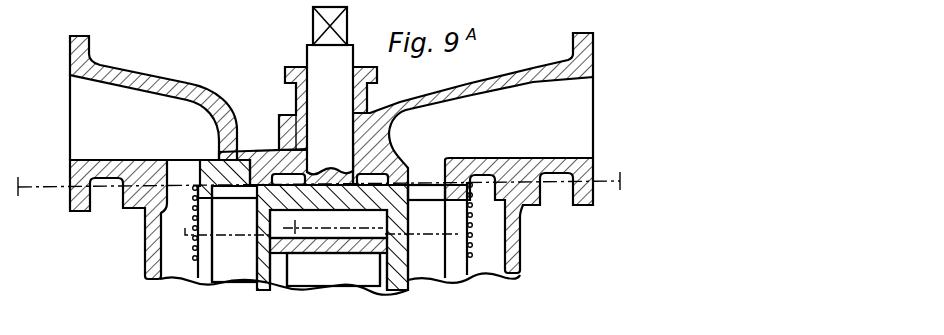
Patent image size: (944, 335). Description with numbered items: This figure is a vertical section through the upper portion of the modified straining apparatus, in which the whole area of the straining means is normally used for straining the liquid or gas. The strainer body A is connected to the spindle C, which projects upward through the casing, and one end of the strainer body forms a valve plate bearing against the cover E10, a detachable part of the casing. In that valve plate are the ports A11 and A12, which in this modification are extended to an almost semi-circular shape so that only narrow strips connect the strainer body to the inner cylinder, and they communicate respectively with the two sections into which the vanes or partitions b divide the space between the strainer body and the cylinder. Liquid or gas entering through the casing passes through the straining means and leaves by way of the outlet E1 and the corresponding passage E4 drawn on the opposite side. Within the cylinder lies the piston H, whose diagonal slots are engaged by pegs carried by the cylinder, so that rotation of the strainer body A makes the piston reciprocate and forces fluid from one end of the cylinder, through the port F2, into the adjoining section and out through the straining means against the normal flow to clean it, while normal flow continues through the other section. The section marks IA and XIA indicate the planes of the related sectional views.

The left nozzle / inlet passage E4 is at (140, 107).
The outlet E1 is at (531, 98).
The cover E10 is at (252, 168).
The spindle C is at (316, 53).
The port A11 is at (209, 176).
The port A12 is at (424, 192).
The strainer body A is at (203, 268).
The partitions b is at (237, 262).
The piston H is at (262, 275).
The port F2 is at (297, 256).
The springs (section I-A) IA is at (329, 227).
The section line XI-A XIA is at (326, 168).